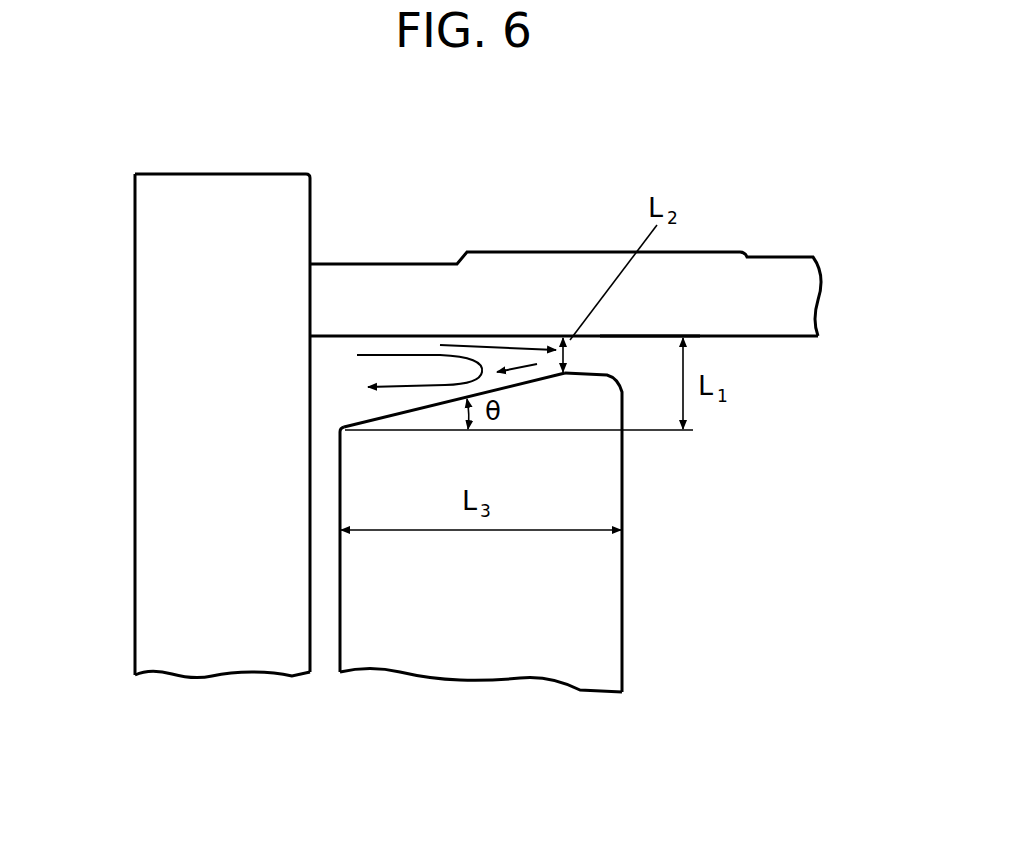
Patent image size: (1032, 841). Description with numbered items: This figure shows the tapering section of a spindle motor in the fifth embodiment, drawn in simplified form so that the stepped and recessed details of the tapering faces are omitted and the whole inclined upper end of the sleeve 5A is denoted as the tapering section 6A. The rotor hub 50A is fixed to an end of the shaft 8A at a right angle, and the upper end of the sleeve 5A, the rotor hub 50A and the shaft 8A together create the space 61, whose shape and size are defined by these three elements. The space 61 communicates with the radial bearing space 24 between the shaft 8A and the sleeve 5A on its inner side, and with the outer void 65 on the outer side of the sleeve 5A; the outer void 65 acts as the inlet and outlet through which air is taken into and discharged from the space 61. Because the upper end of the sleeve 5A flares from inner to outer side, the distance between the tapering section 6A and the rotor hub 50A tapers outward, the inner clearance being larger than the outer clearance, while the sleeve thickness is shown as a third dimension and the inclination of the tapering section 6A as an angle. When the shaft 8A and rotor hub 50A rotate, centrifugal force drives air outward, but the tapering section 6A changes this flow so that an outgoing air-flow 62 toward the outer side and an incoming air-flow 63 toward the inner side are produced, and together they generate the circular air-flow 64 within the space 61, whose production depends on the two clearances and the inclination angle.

The sleeve 5A is at (503, 602).
The tapering section 6A is at (508, 387).
The shaft 8A is at (202, 632).
The radial bearing space 24 is at (327, 575).
The rotor hub 50A is at (792, 293).
The space 61 is at (327, 388).
The outgoing air-flow 62 is at (452, 338).
The incoming air-flow 63 is at (520, 367).
The circular air-flow 64 is at (372, 354).
The outer void 65 is at (610, 357).